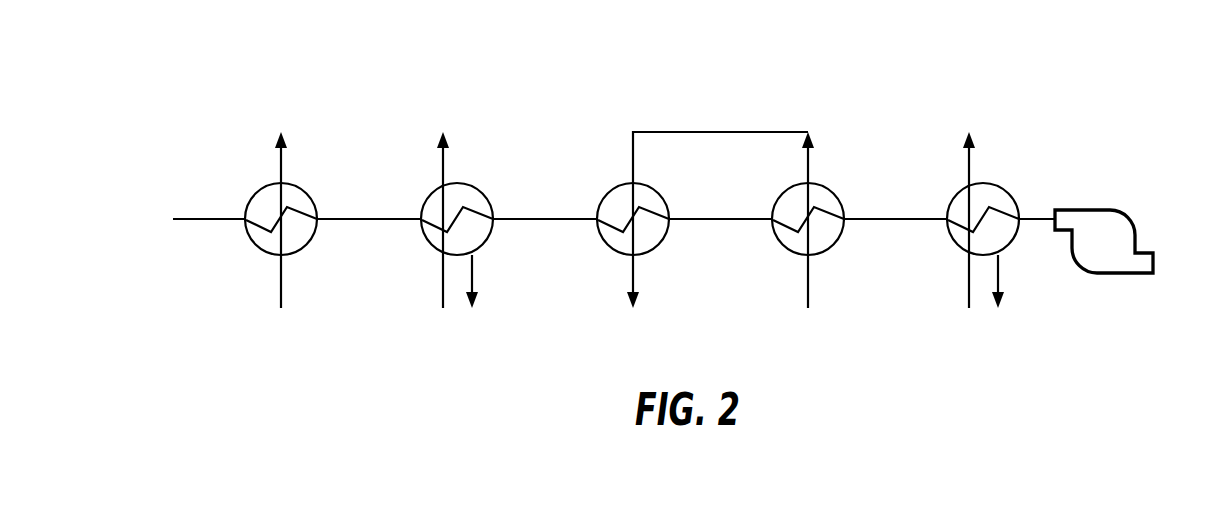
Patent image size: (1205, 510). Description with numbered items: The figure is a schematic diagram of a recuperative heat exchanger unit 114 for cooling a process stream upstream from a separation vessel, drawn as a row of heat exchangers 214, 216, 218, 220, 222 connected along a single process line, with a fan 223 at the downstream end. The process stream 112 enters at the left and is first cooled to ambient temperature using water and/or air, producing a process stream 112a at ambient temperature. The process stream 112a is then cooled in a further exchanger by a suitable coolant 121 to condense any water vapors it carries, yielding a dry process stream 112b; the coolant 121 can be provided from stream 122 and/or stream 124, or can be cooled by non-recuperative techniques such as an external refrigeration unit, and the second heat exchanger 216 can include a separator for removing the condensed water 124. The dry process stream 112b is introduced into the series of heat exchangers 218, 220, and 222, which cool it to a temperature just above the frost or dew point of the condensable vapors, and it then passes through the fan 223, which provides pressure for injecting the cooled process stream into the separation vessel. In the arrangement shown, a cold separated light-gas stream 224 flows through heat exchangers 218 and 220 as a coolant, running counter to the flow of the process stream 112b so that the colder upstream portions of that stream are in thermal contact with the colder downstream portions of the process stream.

The heat exchanger unit 114 is at (240, 105).
The process stream 112 is at (218, 218).
The process stream at ambient temperature 112a is at (377, 218).
The dry process stream 112b is at (557, 218).
The coolant 121 is at (443, 167).
The stream 122 is at (968, 279).
The condensed water / cold separated light-gas stream 124 is at (478, 281).
The heat exchanger 214 is at (255, 247).
The second heat exchanger 216 is at (430, 246).
The heat exchanger 218 is at (605, 247).
The heat exchanger 220 is at (782, 247).
The heat exchanger 222 is at (957, 247).
The fan 223 is at (1095, 210).
The cold separated light-gas stream 224 is at (808, 279).